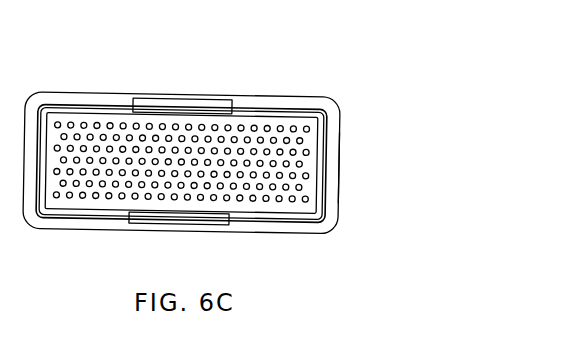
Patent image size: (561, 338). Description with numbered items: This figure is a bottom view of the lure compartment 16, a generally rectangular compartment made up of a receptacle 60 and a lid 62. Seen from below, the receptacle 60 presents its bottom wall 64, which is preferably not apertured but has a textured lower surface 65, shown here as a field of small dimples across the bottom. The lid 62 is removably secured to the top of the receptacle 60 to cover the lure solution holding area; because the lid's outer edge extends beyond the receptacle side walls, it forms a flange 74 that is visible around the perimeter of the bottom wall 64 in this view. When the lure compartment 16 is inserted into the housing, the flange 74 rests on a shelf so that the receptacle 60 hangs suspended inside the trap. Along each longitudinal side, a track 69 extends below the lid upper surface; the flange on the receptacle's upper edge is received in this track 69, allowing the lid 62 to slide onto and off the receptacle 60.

The lure compartment 16 is at (213, 157).
The receptacle 60 is at (78, 108).
The lid 62 is at (312, 234).
The bottom wall 64 is at (273, 140).
The textured lower surface 65 is at (129, 138).
The track 69 is at (210, 108).
The flange 74 is at (333, 170).